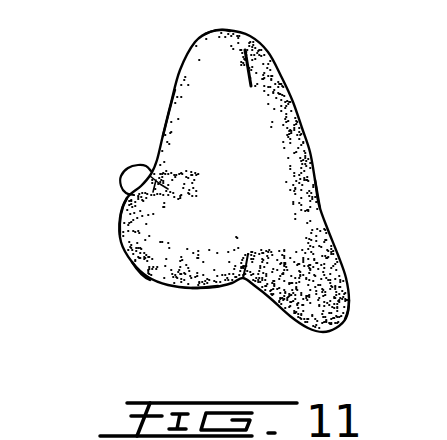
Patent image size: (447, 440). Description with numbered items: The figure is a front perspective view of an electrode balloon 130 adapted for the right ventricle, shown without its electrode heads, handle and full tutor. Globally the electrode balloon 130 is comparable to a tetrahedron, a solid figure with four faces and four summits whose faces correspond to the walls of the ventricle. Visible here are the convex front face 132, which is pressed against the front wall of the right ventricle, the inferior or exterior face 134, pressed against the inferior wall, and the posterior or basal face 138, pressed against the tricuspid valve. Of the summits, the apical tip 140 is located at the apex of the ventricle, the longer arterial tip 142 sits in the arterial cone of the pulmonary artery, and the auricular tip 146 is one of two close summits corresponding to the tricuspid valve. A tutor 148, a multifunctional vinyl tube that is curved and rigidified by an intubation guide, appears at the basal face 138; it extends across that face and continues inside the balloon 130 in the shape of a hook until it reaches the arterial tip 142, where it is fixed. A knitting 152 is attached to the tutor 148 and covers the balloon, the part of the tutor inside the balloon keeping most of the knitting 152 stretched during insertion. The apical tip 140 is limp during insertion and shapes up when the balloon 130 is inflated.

The electrode balloon 130 is at (326, 144).
The front face 132 is at (273, 222).
The inferior or exterior face 134 is at (215, 289).
The posterior or basal face 138 is at (166, 135).
The apical tip 140 is at (347, 317).
The arterial tip 142 is at (243, 32).
The auricular tip 146 is at (145, 282).
The tutor 148 is at (112, 172).
The knitting 152 is at (109, 224).